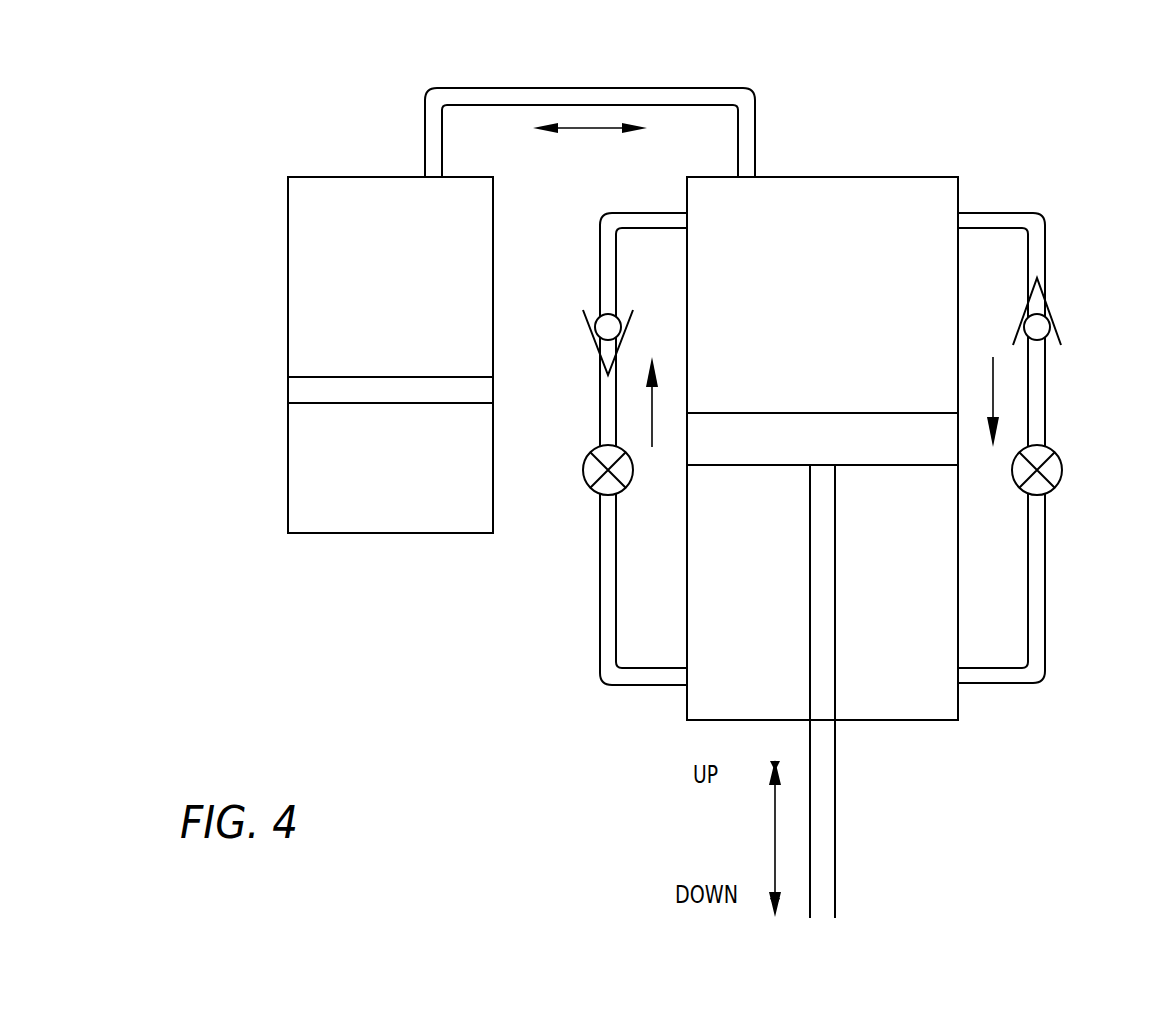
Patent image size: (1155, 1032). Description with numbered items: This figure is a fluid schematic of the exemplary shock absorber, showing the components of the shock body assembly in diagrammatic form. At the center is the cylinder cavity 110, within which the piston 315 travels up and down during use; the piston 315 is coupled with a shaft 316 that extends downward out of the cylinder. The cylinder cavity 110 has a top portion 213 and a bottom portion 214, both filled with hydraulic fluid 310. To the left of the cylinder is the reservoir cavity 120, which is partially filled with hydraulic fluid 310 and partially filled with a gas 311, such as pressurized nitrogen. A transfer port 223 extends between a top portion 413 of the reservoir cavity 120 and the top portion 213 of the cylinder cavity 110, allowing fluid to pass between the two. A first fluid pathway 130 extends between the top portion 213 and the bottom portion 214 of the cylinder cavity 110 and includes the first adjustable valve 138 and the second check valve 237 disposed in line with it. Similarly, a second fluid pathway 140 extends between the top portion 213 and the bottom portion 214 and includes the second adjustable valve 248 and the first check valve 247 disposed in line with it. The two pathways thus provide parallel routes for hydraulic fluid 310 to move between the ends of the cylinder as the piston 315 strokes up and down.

The cylinder cavity 110 is at (907, 177).
The reservoir cavity 120 is at (288, 278).
The first fluid pathway 130 is at (600, 637).
The first adjustable valve 138 is at (580, 468).
The second fluid pathway 140 is at (1045, 573).
The top portion 213 is at (923, 202).
The bottom portion 214 is at (927, 663).
The transfer port 223 is at (590, 89).
The second check valve 237 is at (593, 343).
The first check valve 247 is at (1050, 313).
The second adjustable valve 248 is at (1060, 470).
The hydraulic fluid 310 is at (340, 333).
The gas 311 is at (325, 485).
The piston 315 is at (822, 413).
The shaft 316 is at (835, 872).
The top portion 413 is at (334, 177).